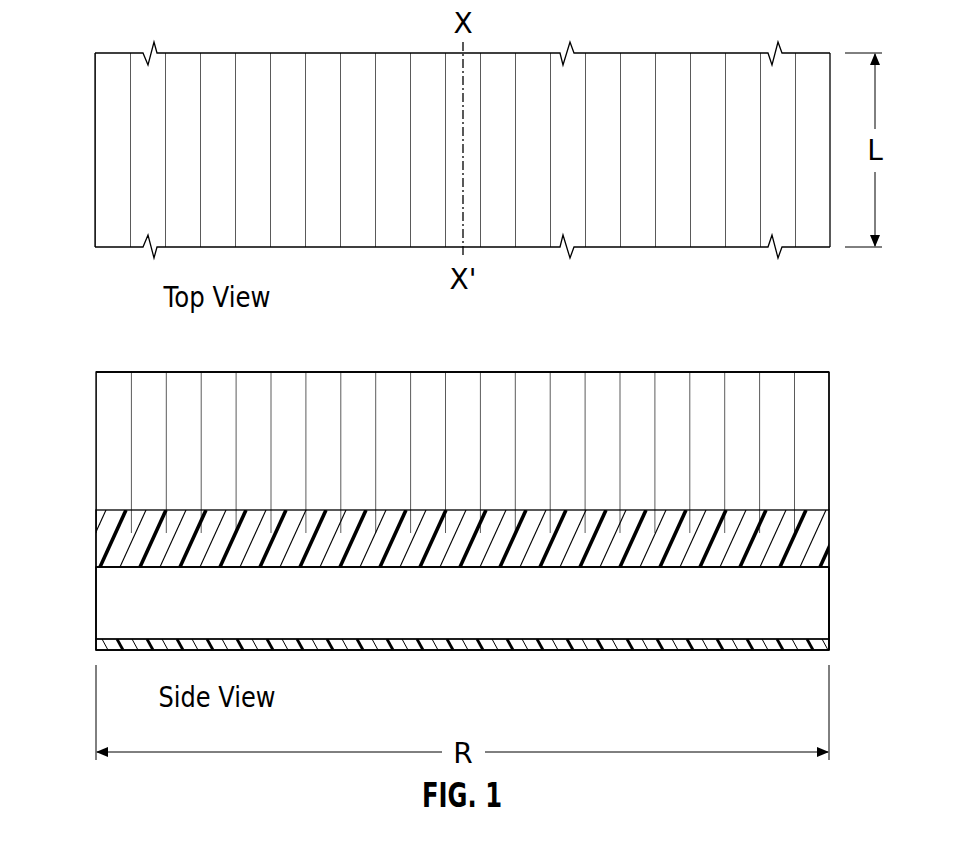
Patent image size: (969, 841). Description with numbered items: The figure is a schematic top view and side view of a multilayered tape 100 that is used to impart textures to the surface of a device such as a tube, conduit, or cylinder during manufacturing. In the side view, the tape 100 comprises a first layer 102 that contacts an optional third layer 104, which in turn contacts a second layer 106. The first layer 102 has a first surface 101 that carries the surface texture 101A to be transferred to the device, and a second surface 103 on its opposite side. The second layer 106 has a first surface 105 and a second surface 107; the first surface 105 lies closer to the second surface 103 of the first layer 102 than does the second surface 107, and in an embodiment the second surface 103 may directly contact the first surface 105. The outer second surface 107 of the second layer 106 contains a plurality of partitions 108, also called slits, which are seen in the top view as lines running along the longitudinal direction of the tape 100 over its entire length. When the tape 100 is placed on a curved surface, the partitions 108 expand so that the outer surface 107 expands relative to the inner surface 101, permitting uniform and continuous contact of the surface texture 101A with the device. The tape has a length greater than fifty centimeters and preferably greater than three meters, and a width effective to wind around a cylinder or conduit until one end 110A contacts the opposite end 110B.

The multilayered tape 100 is at (746, 332).
The first surface of the first layer 101 is at (460, 640).
The surface texture 101A is at (477, 652).
The first layer 102 is at (817, 623).
The second surface of the first layer 103 is at (615, 569).
The third layer 104 is at (295, 558).
The first surface of the second layer 105 is at (815, 510).
The second layer 106 is at (820, 397).
The second surface of the second layer 107 is at (731, 29).
The partitions 108 is at (620, 72).
The end of the tape 110A is at (829, 615).
The end of the tape 110B is at (96, 615).